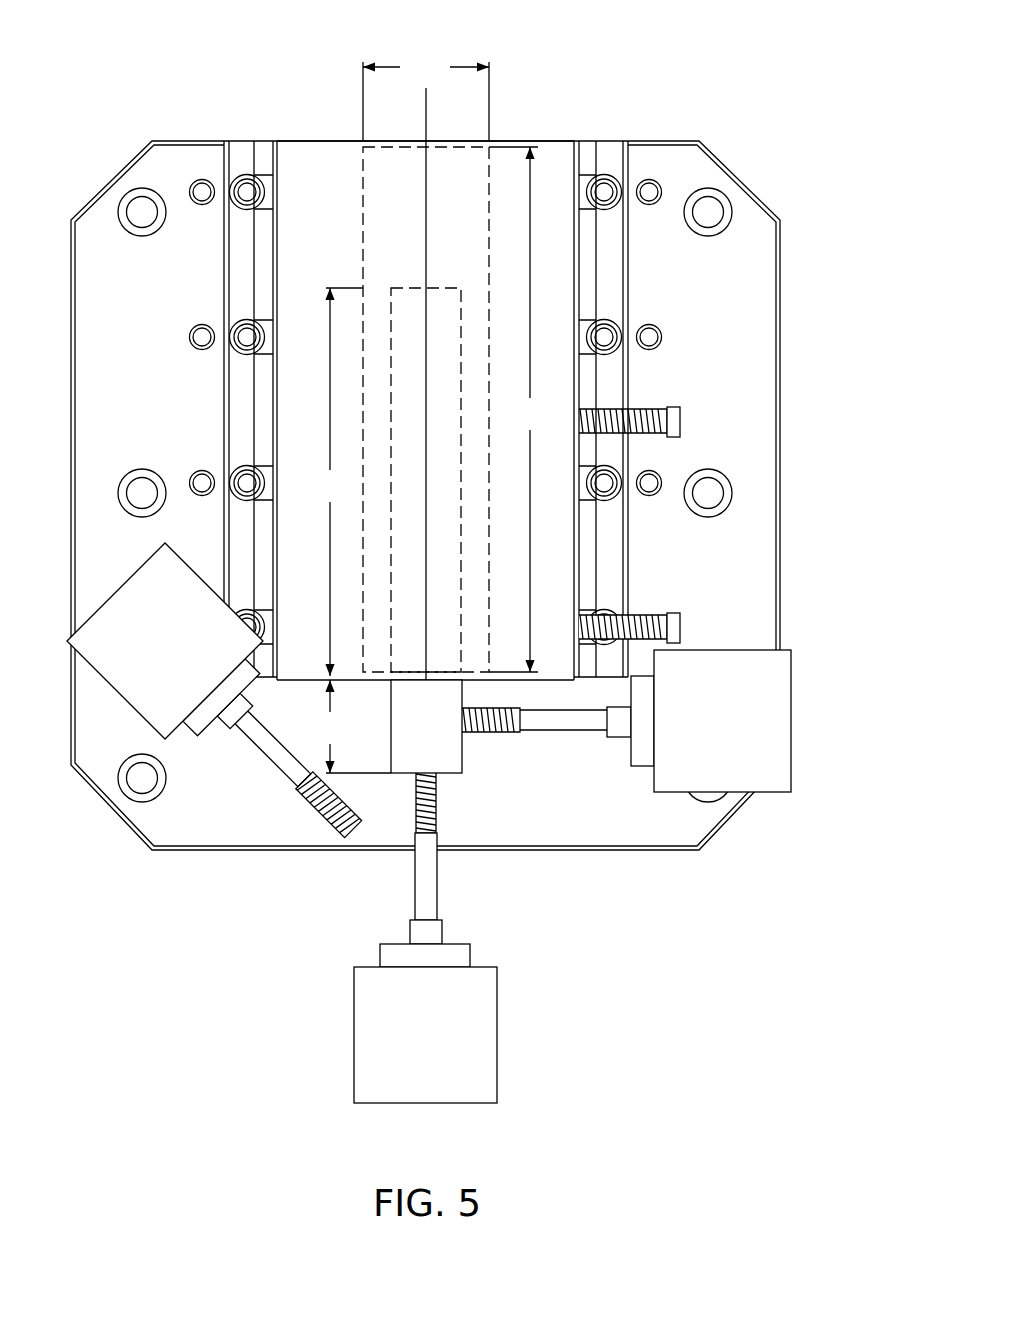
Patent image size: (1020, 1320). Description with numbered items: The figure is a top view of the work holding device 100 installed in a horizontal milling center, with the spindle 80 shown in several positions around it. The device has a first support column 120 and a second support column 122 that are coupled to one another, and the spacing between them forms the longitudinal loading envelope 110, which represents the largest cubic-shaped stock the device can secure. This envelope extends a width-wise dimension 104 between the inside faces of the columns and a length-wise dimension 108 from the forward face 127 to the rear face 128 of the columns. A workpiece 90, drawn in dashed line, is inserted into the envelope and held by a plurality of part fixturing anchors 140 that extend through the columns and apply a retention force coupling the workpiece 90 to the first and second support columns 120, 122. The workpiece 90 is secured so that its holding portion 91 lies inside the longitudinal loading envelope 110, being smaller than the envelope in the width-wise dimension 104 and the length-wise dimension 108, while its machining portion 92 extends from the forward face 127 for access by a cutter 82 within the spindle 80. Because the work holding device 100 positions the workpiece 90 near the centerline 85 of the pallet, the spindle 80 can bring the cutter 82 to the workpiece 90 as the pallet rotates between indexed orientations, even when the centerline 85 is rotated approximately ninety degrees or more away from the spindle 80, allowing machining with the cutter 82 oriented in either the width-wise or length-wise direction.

The work holding device 100 is at (763, 107).
The spindle 80 is at (791, 688).
The cutter 82 is at (520, 733).
The centerline 85 is at (428, 115).
The workpiece 90 is at (462, 773).
The holding portion 91 is at (338, 482).
The machining portion 92 is at (352, 726).
The width-wise dimension 104 is at (426, 97).
The length-wise dimension 108 is at (521, 409).
The longitudinal loading envelope 110 is at (490, 140).
The first support column 120 is at (298, 148).
The second support column 122 is at (555, 148).
The forward face 127 is at (548, 680).
The rear face 128 is at (319, 141).
The part fixturing anchors 140 is at (677, 399).